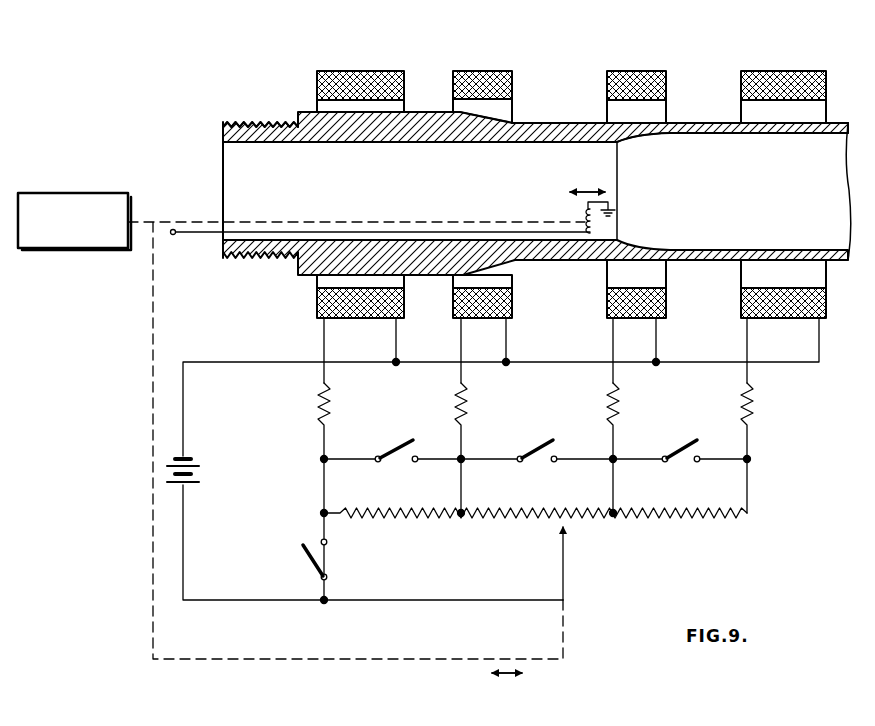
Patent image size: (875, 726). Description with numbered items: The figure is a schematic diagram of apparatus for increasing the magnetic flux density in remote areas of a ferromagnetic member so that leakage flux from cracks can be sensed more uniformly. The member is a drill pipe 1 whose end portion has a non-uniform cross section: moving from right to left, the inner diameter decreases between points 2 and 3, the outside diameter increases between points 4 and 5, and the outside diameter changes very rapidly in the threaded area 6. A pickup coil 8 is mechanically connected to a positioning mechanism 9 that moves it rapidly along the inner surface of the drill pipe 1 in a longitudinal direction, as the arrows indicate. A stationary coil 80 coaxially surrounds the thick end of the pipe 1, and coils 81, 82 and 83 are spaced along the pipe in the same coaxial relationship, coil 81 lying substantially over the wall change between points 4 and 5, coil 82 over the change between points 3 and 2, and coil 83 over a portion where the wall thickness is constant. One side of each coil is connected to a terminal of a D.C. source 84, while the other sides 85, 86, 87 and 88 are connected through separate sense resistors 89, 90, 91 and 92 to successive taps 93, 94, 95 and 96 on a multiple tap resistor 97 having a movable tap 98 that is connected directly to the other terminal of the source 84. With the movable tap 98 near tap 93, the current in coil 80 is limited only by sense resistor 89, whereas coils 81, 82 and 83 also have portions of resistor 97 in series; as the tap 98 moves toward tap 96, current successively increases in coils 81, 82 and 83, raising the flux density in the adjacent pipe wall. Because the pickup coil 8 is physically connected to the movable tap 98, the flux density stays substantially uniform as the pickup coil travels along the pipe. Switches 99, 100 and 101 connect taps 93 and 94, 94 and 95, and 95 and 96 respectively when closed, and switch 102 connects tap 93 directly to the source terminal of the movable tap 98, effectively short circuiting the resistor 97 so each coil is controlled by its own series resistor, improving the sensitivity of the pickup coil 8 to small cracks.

The drill pipe 1 is at (238, 163).
The point 2 is at (694, 135).
The point 3 is at (633, 138).
The point 4 is at (514, 122).
The point 5 is at (470, 111).
The threaded area 6 is at (258, 121).
The pickup coil 8 is at (585, 221).
The positioning mechanism 9 is at (87, 193).
The coil 80 is at (376, 71).
The coil 81 is at (487, 71).
The coil 82 is at (640, 71).
The coil 83 is at (800, 71).
The D.C. source 84 is at (197, 477).
The other side of coil 85 is at (324, 352).
The other side of coil 86 is at (461, 352).
The other side of coil 87 is at (613, 349).
The other side of coil 88 is at (747, 345).
The sense resistor 89 is at (316, 411).
The sense resistor 90 is at (454, 411).
The sense resistor 91 is at (606, 411).
The sense resistor 92 is at (740, 411).
The tap 93 is at (327, 508).
The tap 94 is at (463, 510).
The tap 95 is at (615, 510).
The tap 96 is at (750, 466).
The multiple tap resistor 97 is at (708, 520).
The movable tap 98 is at (566, 588).
The switch 99 is at (400, 445).
The switch 100 is at (543, 445).
The switch 101 is at (686, 445).
The switch 102 is at (328, 578).